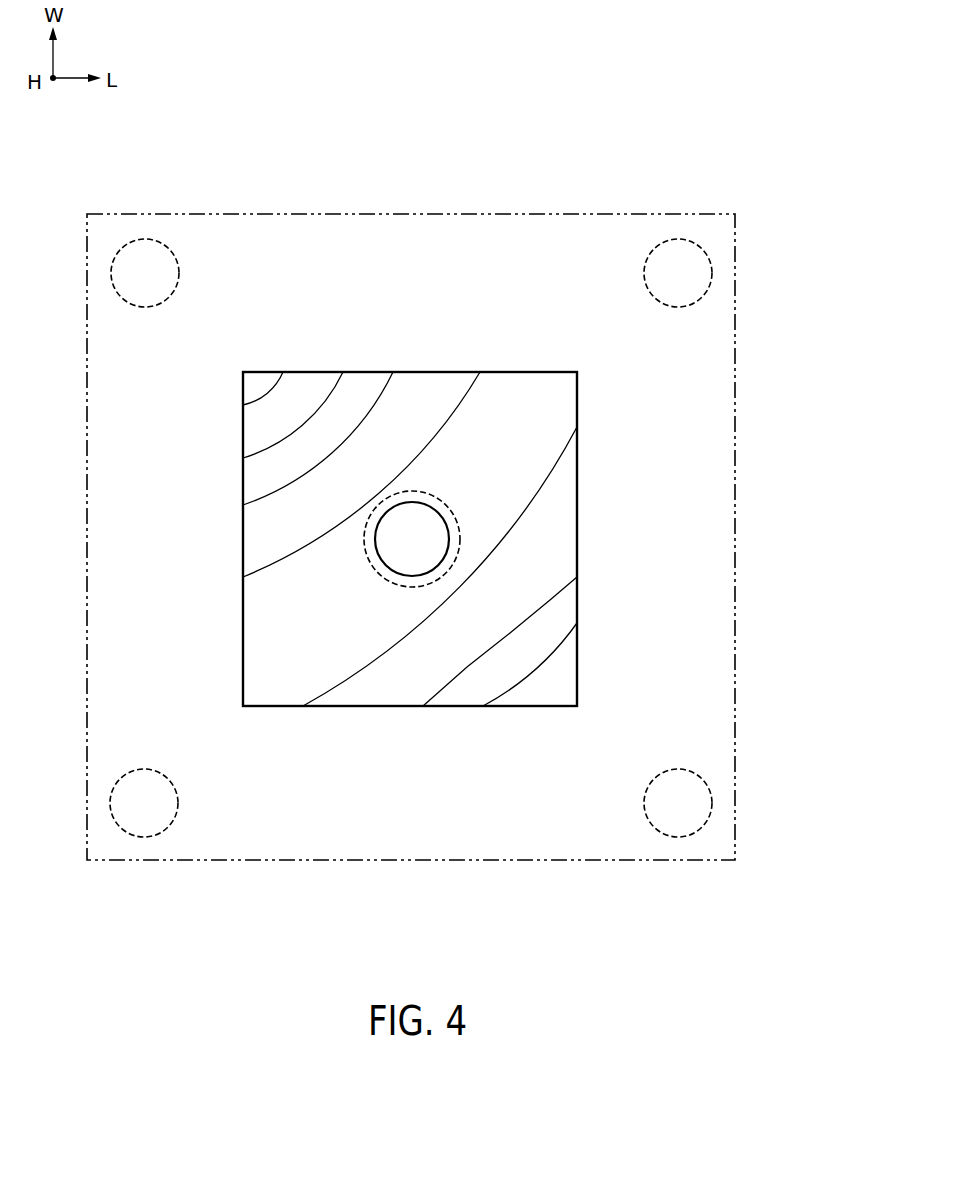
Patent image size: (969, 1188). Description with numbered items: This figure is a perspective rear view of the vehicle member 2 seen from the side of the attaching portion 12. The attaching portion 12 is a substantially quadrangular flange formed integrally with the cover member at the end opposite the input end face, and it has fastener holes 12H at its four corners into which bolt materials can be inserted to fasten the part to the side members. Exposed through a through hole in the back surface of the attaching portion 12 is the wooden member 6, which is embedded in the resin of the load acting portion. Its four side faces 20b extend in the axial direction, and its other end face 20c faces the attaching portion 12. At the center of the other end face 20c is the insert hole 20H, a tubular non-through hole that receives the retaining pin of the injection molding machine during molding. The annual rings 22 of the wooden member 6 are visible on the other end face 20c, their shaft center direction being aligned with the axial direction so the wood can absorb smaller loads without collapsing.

The vehicle member 2 is at (517, 148).
The attaching portion 12 is at (275, 818).
The fastener holes 12H is at (135, 258).
The wooden member 6 is at (462, 537).
The side faces 20b is at (428, 372).
The other end face 20c is at (427, 571).
The insert hole 20H is at (422, 505).
The annual rings 22 is at (266, 397).